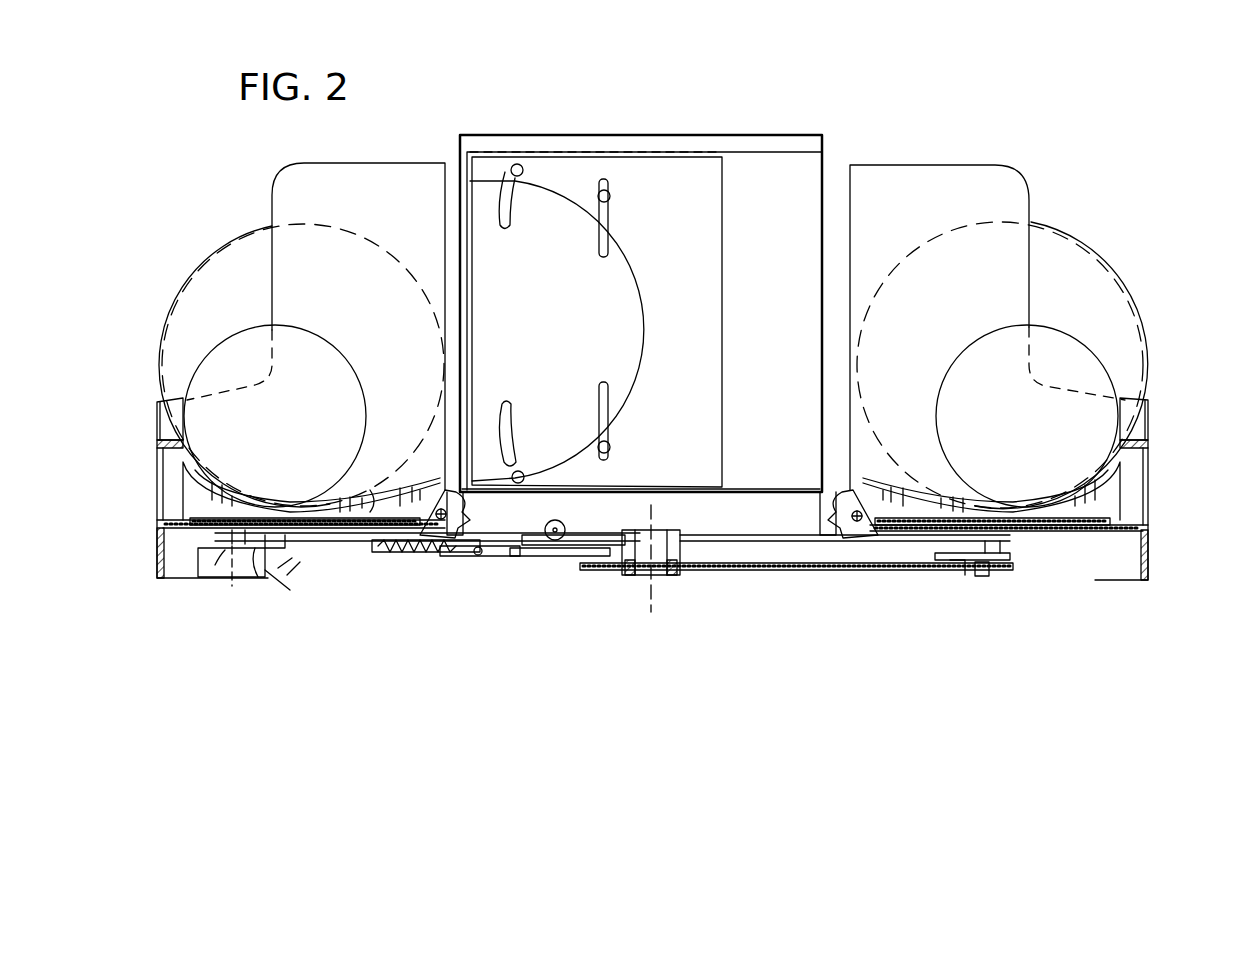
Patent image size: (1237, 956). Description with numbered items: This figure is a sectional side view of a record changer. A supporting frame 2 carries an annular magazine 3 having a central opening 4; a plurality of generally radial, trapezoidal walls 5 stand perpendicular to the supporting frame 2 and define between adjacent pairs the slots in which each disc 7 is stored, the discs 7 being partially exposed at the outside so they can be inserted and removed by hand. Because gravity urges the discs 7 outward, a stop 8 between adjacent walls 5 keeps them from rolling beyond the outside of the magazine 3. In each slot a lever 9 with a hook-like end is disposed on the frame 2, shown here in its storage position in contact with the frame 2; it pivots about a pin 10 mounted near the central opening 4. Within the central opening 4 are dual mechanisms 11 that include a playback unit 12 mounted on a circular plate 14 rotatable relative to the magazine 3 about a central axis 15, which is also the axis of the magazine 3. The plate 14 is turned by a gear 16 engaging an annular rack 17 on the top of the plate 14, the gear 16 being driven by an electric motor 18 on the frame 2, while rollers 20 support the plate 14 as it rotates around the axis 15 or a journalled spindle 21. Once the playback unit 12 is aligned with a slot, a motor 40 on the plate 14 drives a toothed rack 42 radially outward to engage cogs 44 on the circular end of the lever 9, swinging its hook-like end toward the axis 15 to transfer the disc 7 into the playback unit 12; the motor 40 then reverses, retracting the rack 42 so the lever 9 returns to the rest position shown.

The supporting frame 2 is at (1210, 573).
The annular magazine 3 is at (247, 212).
The central opening 4 is at (833, 186).
The walls 5 is at (386, 202).
The disc 7 is at (207, 312).
The stop 8 is at (168, 425).
The lever 9 is at (360, 545).
The pin 10 is at (392, 555).
The dual mechanisms 11 is at (595, 128).
The playback unit 12 is at (668, 200).
The circular plate 14 is at (840, 548).
The central axis 15 is at (650, 575).
The gear 16 is at (248, 578).
The annular rack 17 is at (350, 545).
The electric motor 18 is at (205, 578).
The rollers 20 is at (983, 578).
The journalled spindle 21 is at (665, 572).
The motor 40 is at (556, 548).
The toothed rack 42 is at (505, 556).
The cogs 44 is at (455, 553).